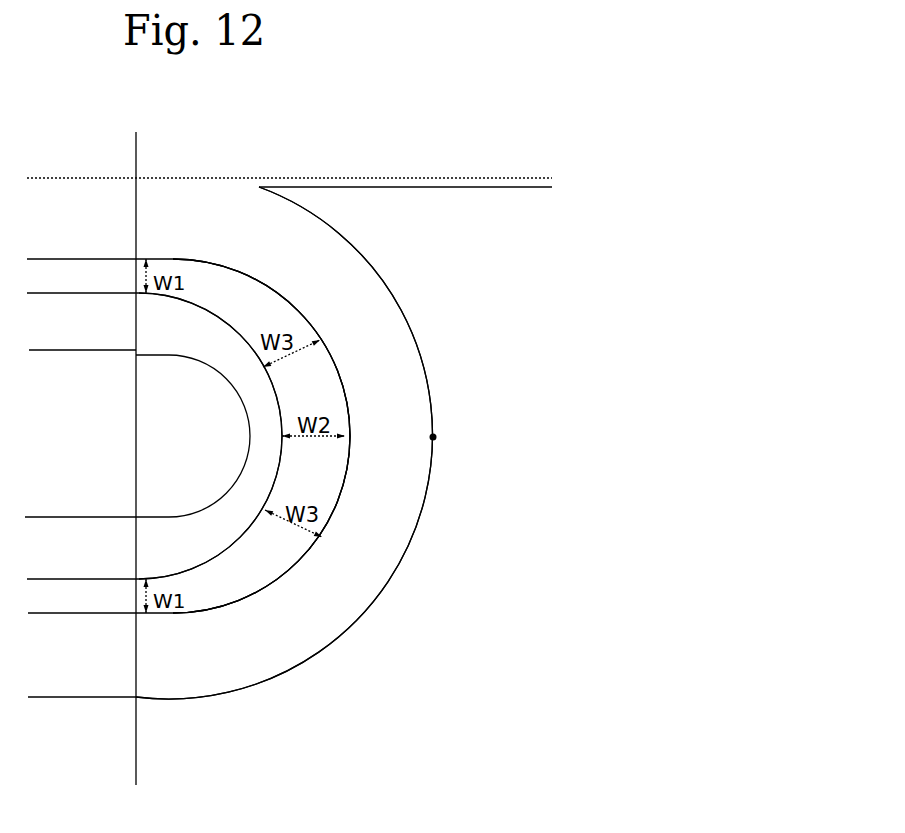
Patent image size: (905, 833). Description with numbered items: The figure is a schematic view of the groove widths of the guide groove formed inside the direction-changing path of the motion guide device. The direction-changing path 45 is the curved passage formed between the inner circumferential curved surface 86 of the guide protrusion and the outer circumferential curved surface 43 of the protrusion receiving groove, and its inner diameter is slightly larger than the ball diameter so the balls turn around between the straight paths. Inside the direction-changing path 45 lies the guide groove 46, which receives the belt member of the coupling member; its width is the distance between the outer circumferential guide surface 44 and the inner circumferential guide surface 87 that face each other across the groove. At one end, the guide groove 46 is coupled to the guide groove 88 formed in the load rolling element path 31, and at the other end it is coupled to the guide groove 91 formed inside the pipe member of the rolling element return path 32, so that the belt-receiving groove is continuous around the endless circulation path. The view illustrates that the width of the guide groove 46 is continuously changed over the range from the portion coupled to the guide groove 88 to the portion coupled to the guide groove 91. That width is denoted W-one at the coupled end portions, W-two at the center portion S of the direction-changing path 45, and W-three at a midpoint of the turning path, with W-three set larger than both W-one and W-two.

The load rolling element path 31 is at (72, 190).
The rolling element return path 32 is at (96, 690).
The outer circumferential curved surface 43 is at (402, 560).
The outer circumferential guide surface 44 is at (333, 372).
The direction-changing path 45 is at (396, 508).
The guide groove 46 is at (262, 305).
The inner circumferential curved surface 86 is at (200, 515).
The inner circumferential guide surface 87 is at (278, 463).
The guide groove 88 is at (97, 273).
The guide groove 91 is at (70, 598).
The center portion S is at (443, 437).